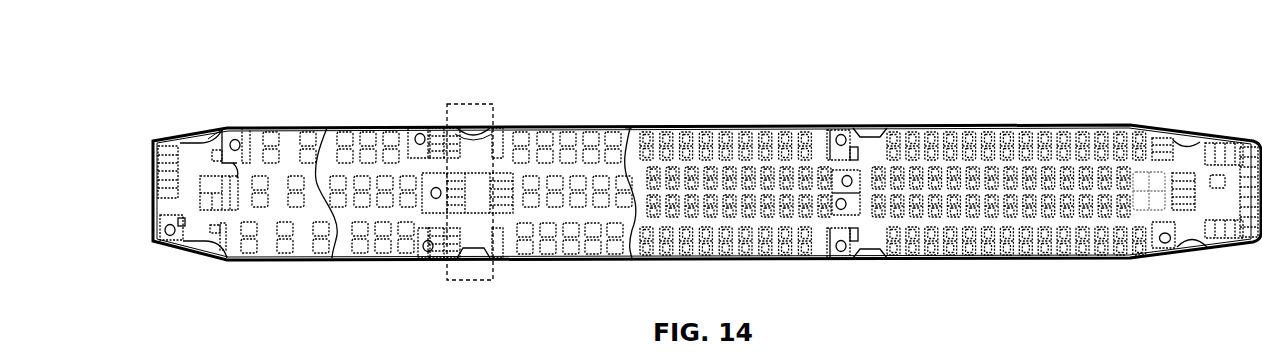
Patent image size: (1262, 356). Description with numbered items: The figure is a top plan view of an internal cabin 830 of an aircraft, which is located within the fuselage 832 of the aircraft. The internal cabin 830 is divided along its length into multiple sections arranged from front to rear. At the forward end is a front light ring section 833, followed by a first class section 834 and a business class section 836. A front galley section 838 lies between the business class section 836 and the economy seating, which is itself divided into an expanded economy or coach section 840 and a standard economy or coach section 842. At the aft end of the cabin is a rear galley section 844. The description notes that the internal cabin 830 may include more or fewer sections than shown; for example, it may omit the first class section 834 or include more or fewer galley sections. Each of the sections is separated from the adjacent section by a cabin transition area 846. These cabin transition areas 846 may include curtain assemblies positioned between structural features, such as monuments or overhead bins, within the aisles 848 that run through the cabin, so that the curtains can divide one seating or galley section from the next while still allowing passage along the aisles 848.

The internal cabin 830 is at (280, 40).
The fuselage 832 is at (582, 88).
The front light ring section 833 is at (203, 272).
The first class section 834 is at (295, 262).
The business class section 836 is at (358, 125).
The front galley section 838 is at (470, 272).
The expanded economy or coach section 840 is at (560, 262).
The standard economy or coach section 842 is at (680, 125).
The rear galley section 844 is at (1195, 142).
The cabin transition area 846 is at (218, 125).
The aisles 848 is at (458, 163).